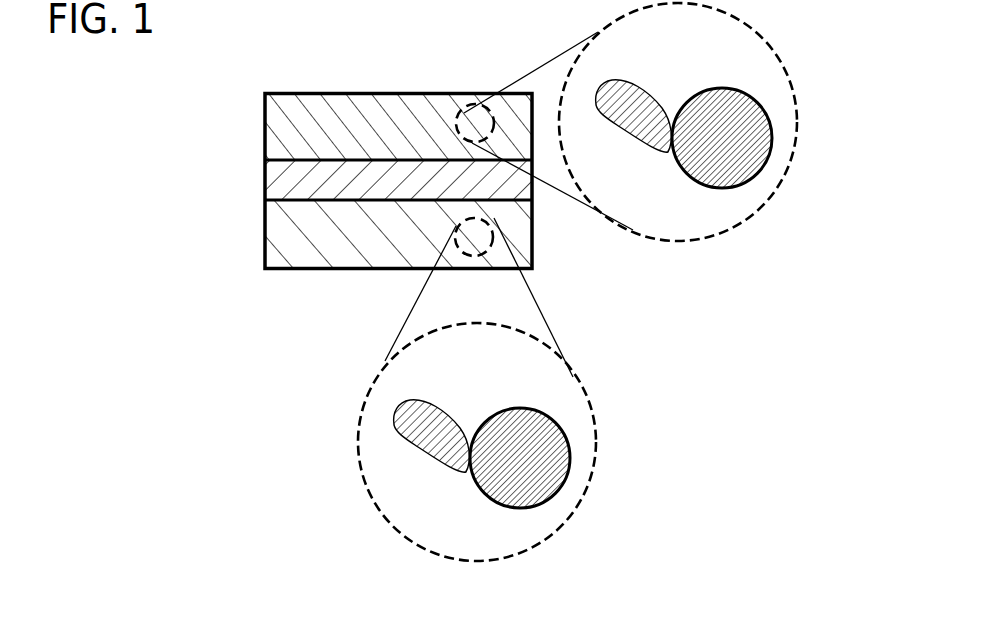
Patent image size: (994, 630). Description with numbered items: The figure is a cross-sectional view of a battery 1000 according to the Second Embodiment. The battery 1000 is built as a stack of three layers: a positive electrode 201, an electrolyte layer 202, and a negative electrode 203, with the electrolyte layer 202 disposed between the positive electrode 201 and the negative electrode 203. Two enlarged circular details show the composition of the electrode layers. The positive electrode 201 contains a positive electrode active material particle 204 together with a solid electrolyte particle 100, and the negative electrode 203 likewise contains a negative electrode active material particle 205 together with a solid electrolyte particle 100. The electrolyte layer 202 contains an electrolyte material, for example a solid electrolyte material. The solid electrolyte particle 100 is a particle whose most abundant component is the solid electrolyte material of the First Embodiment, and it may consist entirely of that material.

The battery 1000 is at (437, 45).
The positive electrode 201 is at (298, 113).
The electrolyte layer 202 is at (298, 178).
The negative electrode 203 is at (298, 235).
The positive electrode active material particle 204 is at (764, 139).
The negative electrode active material particle 205 is at (567, 452).
The solid electrolyte particle 100 is at (655, 152).